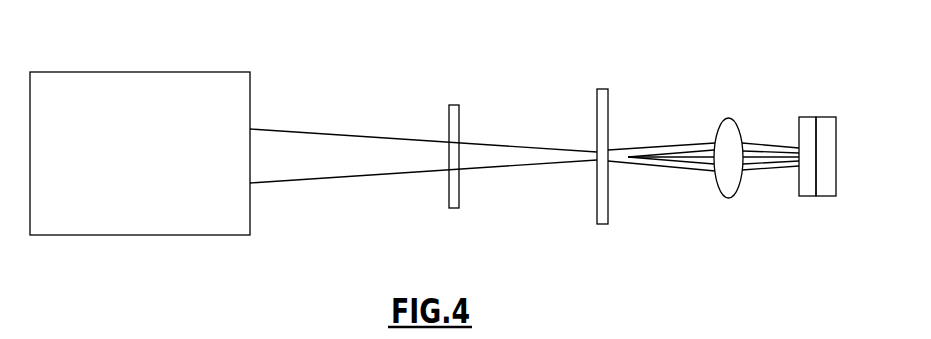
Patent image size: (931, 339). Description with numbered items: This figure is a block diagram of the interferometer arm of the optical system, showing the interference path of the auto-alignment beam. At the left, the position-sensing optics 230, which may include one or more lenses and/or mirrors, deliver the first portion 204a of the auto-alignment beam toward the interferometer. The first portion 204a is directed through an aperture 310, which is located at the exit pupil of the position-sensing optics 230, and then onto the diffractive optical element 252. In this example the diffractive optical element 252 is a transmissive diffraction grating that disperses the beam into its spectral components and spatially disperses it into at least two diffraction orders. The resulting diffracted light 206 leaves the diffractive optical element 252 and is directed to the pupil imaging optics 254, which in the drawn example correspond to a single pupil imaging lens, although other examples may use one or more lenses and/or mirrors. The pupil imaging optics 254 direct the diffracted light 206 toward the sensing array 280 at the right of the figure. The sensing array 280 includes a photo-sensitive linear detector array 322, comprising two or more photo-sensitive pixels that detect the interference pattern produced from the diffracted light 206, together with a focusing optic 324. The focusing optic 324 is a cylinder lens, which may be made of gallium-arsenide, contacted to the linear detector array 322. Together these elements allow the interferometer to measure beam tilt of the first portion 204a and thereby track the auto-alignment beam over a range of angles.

The position-sensing optics 230 is at (137, 72).
The first portion of the auto-alignment beam 204a is at (346, 198).
The aperture 310 is at (449, 120).
The diffractive optical element 252 is at (597, 183).
The diffracted light 206 is at (671, 126).
The pupil imaging optics 254 is at (717, 183).
The focusing optic 324 is at (803, 117).
The photo-sensitive linear detector array 322 is at (836, 133).
The sensing array 280 is at (821, 169).